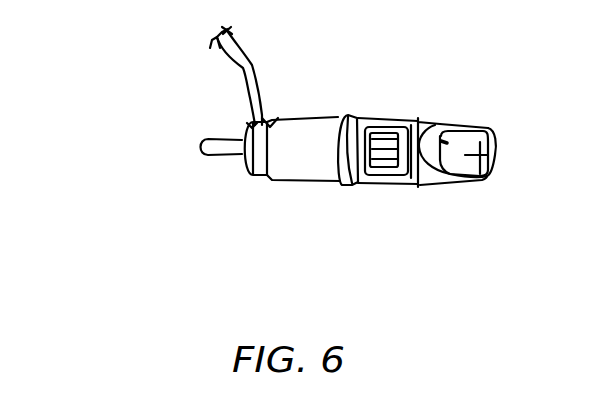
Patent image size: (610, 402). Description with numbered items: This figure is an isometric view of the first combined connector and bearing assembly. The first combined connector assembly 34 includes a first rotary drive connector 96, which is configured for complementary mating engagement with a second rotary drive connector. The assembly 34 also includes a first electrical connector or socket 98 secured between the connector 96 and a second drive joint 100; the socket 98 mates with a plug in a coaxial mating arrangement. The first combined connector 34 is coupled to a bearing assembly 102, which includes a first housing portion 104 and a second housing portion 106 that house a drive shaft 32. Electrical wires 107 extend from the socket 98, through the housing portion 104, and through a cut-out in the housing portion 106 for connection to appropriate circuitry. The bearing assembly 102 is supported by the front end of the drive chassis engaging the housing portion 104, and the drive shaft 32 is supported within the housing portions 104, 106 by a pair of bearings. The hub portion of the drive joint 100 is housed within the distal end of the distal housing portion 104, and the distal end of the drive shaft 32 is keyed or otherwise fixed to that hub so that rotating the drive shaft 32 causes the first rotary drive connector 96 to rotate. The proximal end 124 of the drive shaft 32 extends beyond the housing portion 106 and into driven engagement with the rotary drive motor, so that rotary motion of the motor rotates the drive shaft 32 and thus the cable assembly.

The drive shaft 32 is at (232, 129).
The first combined connector assembly 34 is at (463, 90).
The first rotary drive connector 96 is at (444, 178).
The first electrical connector or socket 98 is at (488, 153).
The second drive joint 100 is at (361, 176).
The bearing assembly 102 is at (295, 100).
The first housing portion 104 is at (295, 172).
The second housing portion 106 is at (257, 175).
The electrical wires 107 is at (238, 37).
The proximal end 124 is at (201, 158).